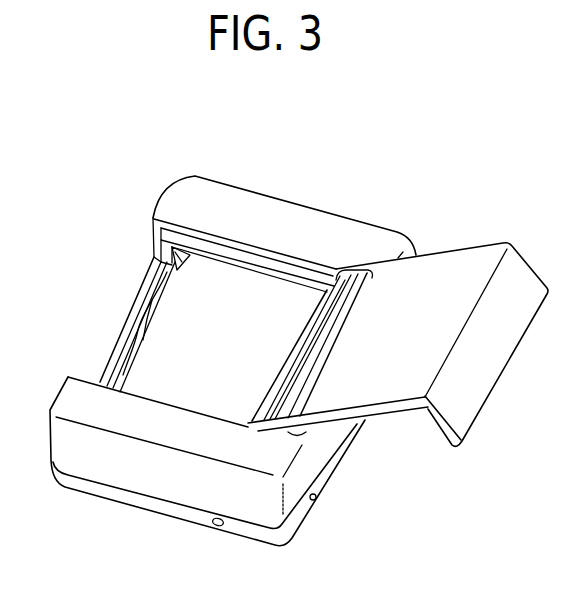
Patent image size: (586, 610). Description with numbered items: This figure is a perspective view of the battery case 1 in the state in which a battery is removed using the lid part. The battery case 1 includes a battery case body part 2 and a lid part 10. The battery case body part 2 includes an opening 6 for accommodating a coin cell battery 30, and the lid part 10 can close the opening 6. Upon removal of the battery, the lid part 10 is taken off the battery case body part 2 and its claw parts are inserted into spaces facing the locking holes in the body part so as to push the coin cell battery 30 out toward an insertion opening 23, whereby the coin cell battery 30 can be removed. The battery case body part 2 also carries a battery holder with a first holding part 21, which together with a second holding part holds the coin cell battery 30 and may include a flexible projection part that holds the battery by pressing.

The battery case 1 is at (369, 212).
The battery case body part 2 is at (263, 192).
The opening 6 is at (137, 277).
The lid part 10 is at (453, 273).
The first holding part 21 is at (187, 388).
The insertion opening 23 is at (118, 310).
The coin cell battery 30 is at (137, 333).